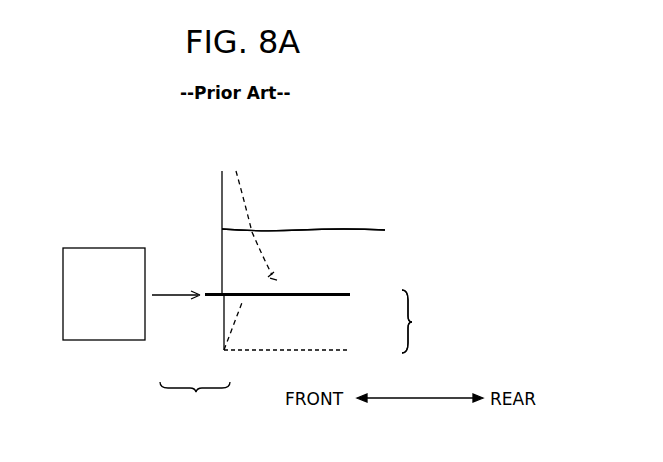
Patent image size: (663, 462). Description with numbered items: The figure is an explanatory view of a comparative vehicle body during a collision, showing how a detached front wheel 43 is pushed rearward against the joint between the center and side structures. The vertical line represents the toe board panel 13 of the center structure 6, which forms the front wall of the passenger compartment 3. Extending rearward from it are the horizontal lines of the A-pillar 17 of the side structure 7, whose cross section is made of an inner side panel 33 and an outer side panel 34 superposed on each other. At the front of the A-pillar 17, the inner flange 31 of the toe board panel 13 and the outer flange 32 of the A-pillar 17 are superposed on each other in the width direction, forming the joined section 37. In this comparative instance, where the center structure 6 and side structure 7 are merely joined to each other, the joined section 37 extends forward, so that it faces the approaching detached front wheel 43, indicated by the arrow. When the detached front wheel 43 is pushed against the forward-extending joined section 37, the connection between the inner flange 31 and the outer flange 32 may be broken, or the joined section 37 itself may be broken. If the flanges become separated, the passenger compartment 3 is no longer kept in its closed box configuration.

The passenger compartment 3 is at (313, 182).
The toe board panel 13 is at (326, 231).
The center structure 6 is at (303, 230).
The inner side panel 33 is at (317, 297).
The outer side panel 34 is at (317, 352).
The A-pillar 17 is at (429, 321).
The side structure 7 is at (407, 321).
The inner flange 31 is at (205, 297).
The outer flange 32 is at (213, 297).
The joined section 37 is at (195, 398).
The detached front wheel 43 is at (82, 342).